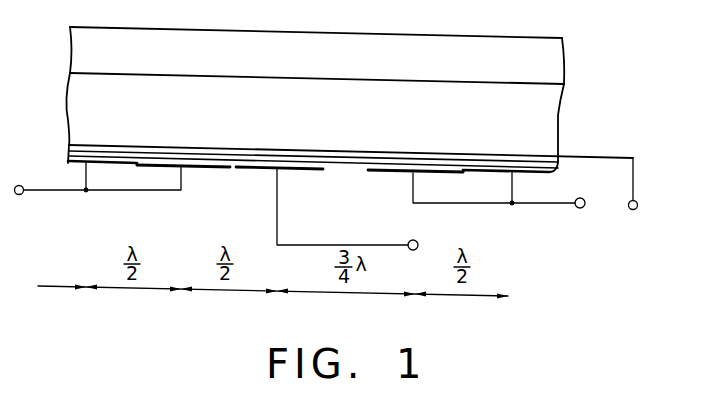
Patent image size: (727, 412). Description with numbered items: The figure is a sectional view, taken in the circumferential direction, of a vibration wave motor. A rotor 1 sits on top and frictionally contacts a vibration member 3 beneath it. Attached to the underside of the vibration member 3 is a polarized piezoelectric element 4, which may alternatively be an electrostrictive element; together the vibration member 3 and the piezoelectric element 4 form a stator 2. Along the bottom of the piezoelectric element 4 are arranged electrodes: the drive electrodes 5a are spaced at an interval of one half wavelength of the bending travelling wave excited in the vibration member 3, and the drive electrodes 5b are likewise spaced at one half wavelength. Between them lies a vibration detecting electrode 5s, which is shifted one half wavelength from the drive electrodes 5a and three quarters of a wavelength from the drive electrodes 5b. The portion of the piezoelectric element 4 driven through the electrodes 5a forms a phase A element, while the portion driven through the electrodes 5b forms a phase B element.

The rotor 1 is at (553, 64).
The stator 2 is at (546, 116).
The vibration member 3 is at (546, 145).
The polarized piezoelectric element 4 is at (254, 147).
The drive electrodes 5a is at (205, 170).
The vibration detecting electrode 5s is at (302, 170).
The drive electrodes 5b is at (378, 173).